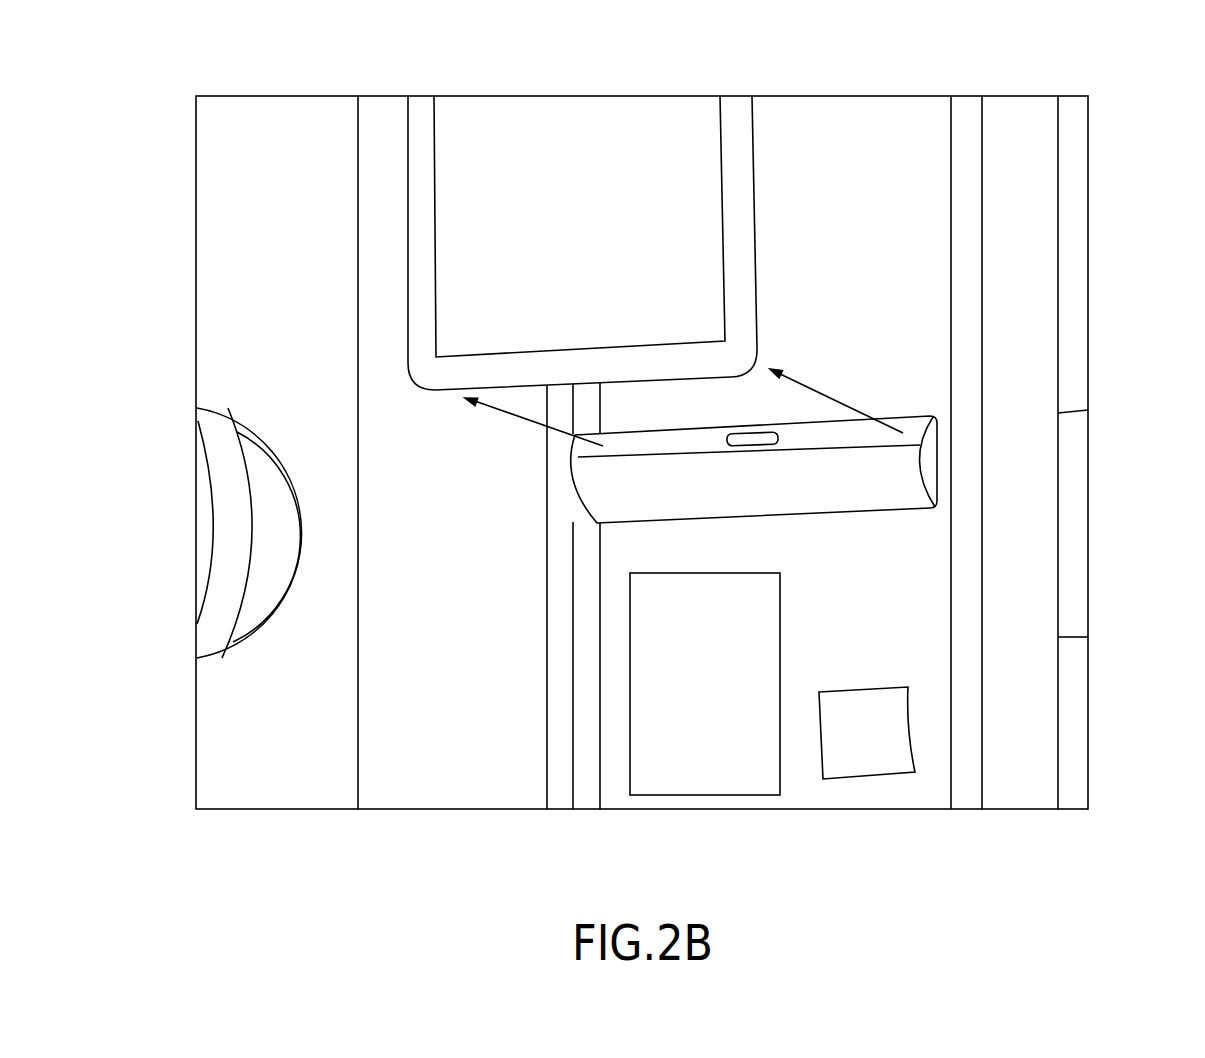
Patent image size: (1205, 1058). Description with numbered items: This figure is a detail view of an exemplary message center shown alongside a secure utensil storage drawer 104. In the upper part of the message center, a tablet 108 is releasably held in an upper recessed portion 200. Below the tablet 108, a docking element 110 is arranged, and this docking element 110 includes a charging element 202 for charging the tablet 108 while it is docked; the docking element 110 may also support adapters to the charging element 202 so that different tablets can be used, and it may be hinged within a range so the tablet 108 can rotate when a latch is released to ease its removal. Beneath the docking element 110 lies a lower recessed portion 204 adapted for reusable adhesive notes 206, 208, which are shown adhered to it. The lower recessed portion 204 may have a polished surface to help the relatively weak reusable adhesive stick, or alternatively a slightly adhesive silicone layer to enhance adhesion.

The secure utensil storage drawer 104 is at (385, 108).
The tablet 108 is at (737, 108).
The docking element 110 is at (907, 478).
The upper recessed portion 200 is at (908, 108).
The charging element 202 is at (755, 438).
The lower recessed portion 204 is at (906, 563).
The reusable adhesive note 206 is at (867, 750).
The reusable adhesive note 208 is at (708, 750).